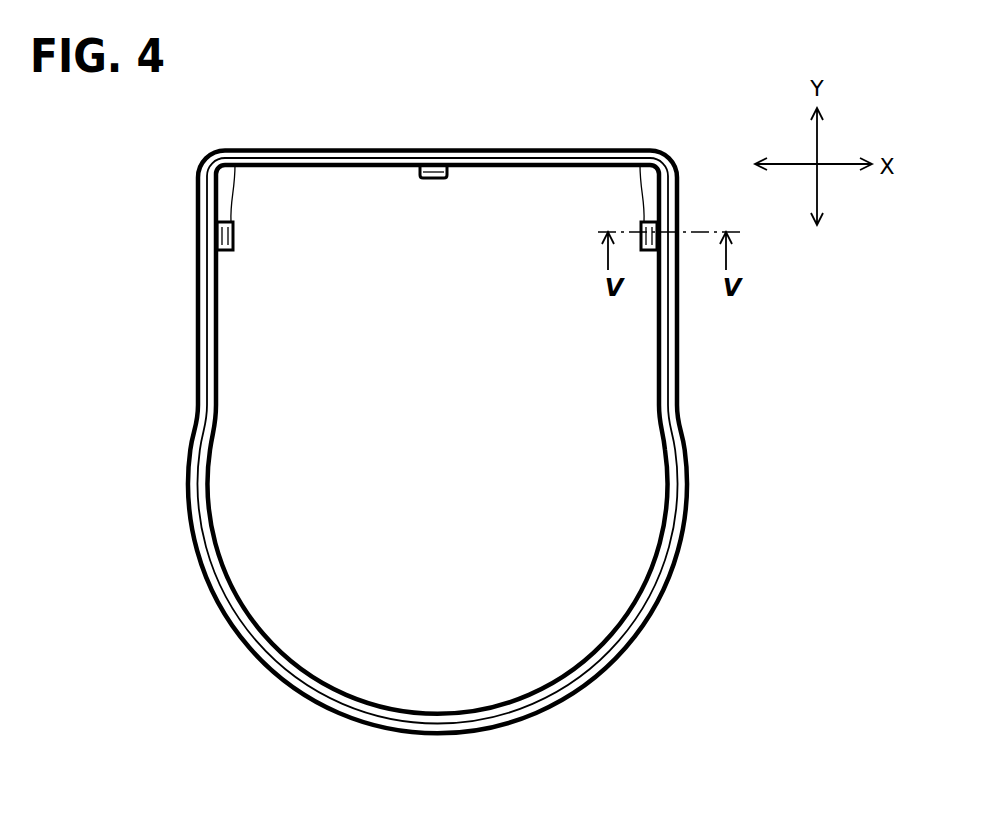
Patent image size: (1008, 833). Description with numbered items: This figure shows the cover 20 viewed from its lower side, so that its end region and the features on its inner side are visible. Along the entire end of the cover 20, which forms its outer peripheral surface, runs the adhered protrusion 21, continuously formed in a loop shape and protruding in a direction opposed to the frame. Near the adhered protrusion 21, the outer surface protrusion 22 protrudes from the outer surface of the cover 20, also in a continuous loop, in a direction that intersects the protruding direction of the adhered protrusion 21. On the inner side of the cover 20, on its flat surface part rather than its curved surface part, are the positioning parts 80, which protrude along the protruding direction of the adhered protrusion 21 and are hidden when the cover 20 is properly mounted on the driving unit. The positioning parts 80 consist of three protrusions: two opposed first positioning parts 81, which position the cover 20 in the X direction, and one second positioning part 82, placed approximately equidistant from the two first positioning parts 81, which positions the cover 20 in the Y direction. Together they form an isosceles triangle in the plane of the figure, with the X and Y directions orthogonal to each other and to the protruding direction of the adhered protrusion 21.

The positioning parts 80 is at (165, 236).
The first positioning parts 81 is at (231, 215).
The second positioning part 82 is at (435, 168).
The cover 20 is at (344, 198).
The adhered protrusion 21 is at (290, 668).
The outer surface protrusion 22 is at (232, 630).